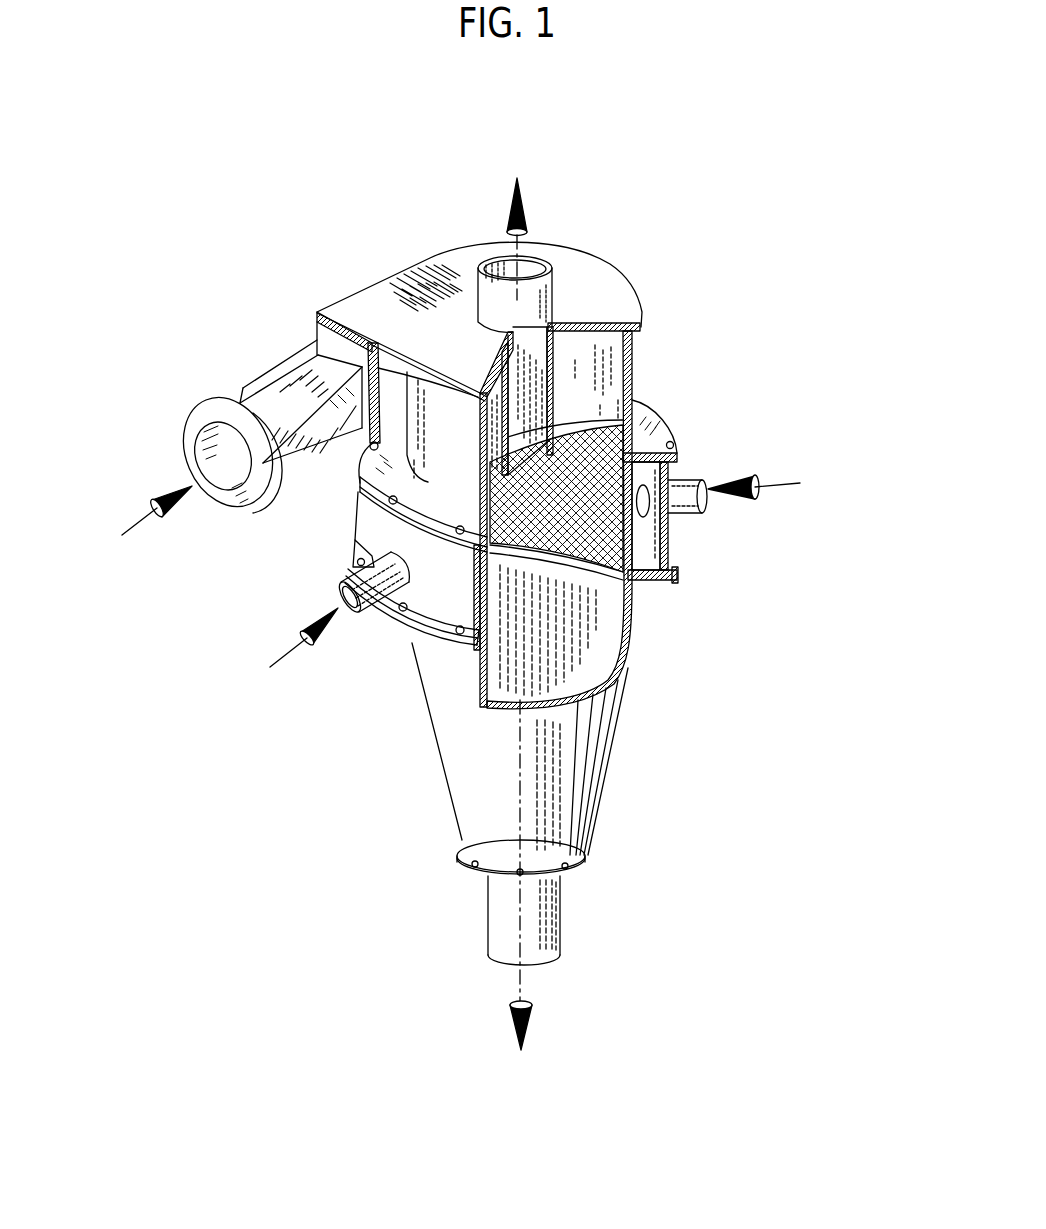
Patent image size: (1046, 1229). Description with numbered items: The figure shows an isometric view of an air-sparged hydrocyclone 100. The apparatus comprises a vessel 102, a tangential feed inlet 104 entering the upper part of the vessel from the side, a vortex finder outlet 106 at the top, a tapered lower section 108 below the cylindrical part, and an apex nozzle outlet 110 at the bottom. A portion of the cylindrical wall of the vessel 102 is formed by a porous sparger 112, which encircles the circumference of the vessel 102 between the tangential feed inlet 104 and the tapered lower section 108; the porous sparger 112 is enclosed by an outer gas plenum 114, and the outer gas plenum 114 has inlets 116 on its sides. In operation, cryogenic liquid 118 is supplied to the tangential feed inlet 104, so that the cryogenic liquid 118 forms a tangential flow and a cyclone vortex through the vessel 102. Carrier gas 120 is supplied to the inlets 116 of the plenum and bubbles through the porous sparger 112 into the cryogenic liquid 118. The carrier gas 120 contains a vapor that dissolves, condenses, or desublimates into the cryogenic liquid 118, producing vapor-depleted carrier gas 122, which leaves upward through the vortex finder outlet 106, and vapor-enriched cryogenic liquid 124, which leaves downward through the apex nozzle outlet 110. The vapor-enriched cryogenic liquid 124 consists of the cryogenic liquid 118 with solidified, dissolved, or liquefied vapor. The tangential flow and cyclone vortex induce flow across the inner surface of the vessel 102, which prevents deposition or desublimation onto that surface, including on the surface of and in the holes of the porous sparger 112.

The air-sparged hydrocyclone 100 is at (203, 210).
The vessel 102 is at (607, 358).
The tangential feed inlet 104 is at (262, 398).
The vortex finder outlet 106 is at (478, 307).
The tapered lower section 108 is at (573, 771).
The apex nozzle outlet 110 is at (497, 916).
The porous sparger 112 is at (590, 562).
The outer gas plenum 114 is at (645, 477).
The inlets 116 is at (338, 580).
The cryogenic liquid 118 is at (126, 523).
The carrier gas 120 is at (538, 580).
The vapor-depleted carrier gas 122 is at (516, 219).
The vapor-enriched cryogenic liquid 124 is at (523, 899).